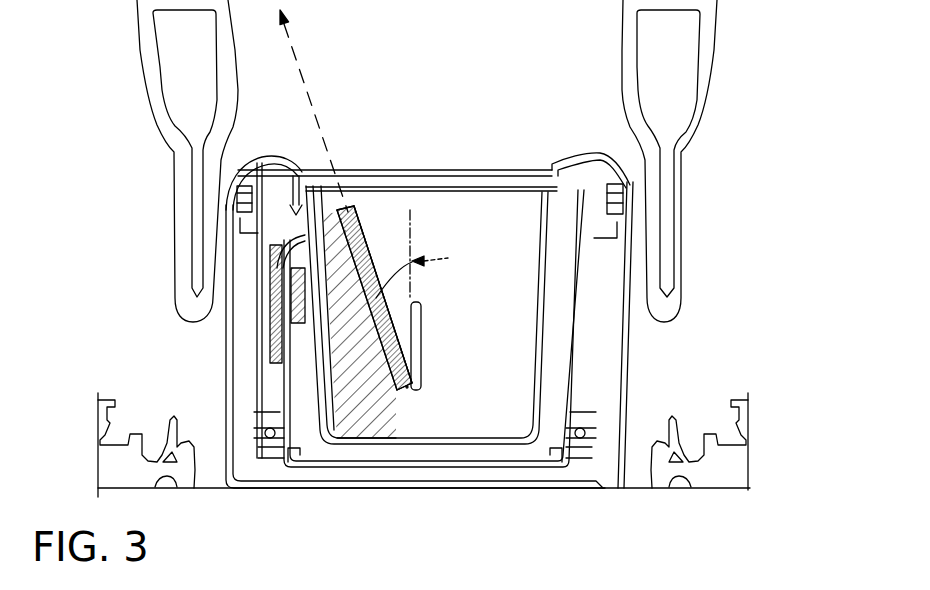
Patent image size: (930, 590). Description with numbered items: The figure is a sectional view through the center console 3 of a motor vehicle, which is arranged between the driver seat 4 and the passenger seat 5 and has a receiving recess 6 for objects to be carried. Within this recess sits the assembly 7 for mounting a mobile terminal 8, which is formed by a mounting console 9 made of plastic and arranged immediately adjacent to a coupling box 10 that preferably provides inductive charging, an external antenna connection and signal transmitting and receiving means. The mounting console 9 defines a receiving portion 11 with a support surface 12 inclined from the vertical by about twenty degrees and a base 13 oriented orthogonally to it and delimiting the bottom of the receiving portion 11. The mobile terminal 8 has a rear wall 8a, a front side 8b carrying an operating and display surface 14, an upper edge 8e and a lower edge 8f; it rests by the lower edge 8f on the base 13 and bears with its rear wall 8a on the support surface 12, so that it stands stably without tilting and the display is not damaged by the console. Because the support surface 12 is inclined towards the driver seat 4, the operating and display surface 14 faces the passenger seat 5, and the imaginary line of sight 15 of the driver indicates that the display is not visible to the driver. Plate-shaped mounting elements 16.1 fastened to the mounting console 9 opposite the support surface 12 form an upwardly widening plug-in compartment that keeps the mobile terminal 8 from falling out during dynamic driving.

The center console 3 is at (574, 343).
The driver seat 4 is at (155, 125).
The passenger seat 5 is at (697, 130).
The receiving recess 6 is at (510, 208).
The assembly 7 is at (364, 133).
The mobile terminal 8 is at (363, 210).
The rear wall 8a is at (338, 268).
The front side 8b is at (399, 290).
The upper edge 8e is at (337, 209).
The lower edge 8f is at (400, 404).
The mounting console 9 is at (352, 428).
The coupling box 10 is at (302, 322).
The receiving portion 11 is at (399, 205).
The support surface 12 is at (400, 327).
The base 13 is at (407, 387).
The operating and display surface 14 is at (383, 294).
The line of sight 15 is at (293, 45).
The mounting element 16.1 is at (417, 362).